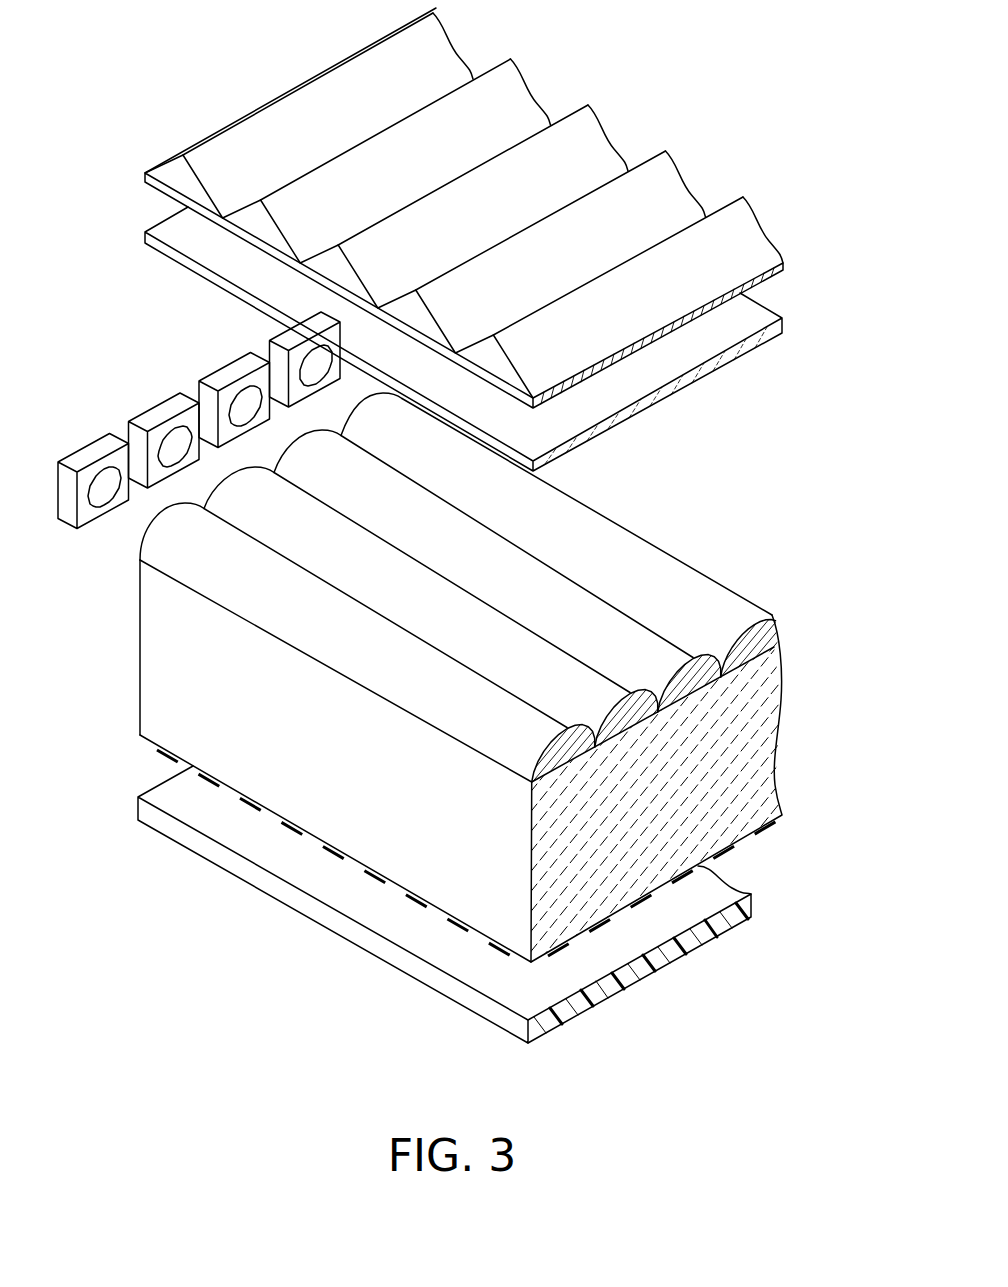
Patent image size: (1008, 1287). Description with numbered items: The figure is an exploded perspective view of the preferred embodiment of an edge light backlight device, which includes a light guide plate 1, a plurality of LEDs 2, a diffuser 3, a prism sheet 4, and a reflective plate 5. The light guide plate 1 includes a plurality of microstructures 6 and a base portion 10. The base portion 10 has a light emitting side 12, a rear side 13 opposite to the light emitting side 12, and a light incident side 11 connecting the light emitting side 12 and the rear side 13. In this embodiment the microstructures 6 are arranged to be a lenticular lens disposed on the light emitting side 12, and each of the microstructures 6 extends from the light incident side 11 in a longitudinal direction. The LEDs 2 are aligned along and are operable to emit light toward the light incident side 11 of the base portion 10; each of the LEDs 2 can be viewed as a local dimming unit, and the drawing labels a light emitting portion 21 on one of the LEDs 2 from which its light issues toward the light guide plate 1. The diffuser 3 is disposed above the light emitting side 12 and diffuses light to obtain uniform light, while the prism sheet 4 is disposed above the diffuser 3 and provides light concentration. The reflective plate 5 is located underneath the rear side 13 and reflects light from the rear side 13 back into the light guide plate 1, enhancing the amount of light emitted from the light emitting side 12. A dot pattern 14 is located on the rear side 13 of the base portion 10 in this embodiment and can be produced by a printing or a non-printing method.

The light guide plate 1 is at (453, 742).
The base portion 10 is at (745, 752).
The light incident side 11 is at (138, 618).
The light emitting side 12 is at (478, 752).
The rear side 13 is at (598, 1003).
The dot pattern 14 is at (288, 833).
The LEDs 2 is at (199, 446).
The light emitting portion 21 is at (107, 493).
The diffuser 3 is at (728, 322).
The prism sheet 4 is at (662, 215).
The reflective plate 5 is at (444, 934).
The microstructures 6 is at (627, 647).